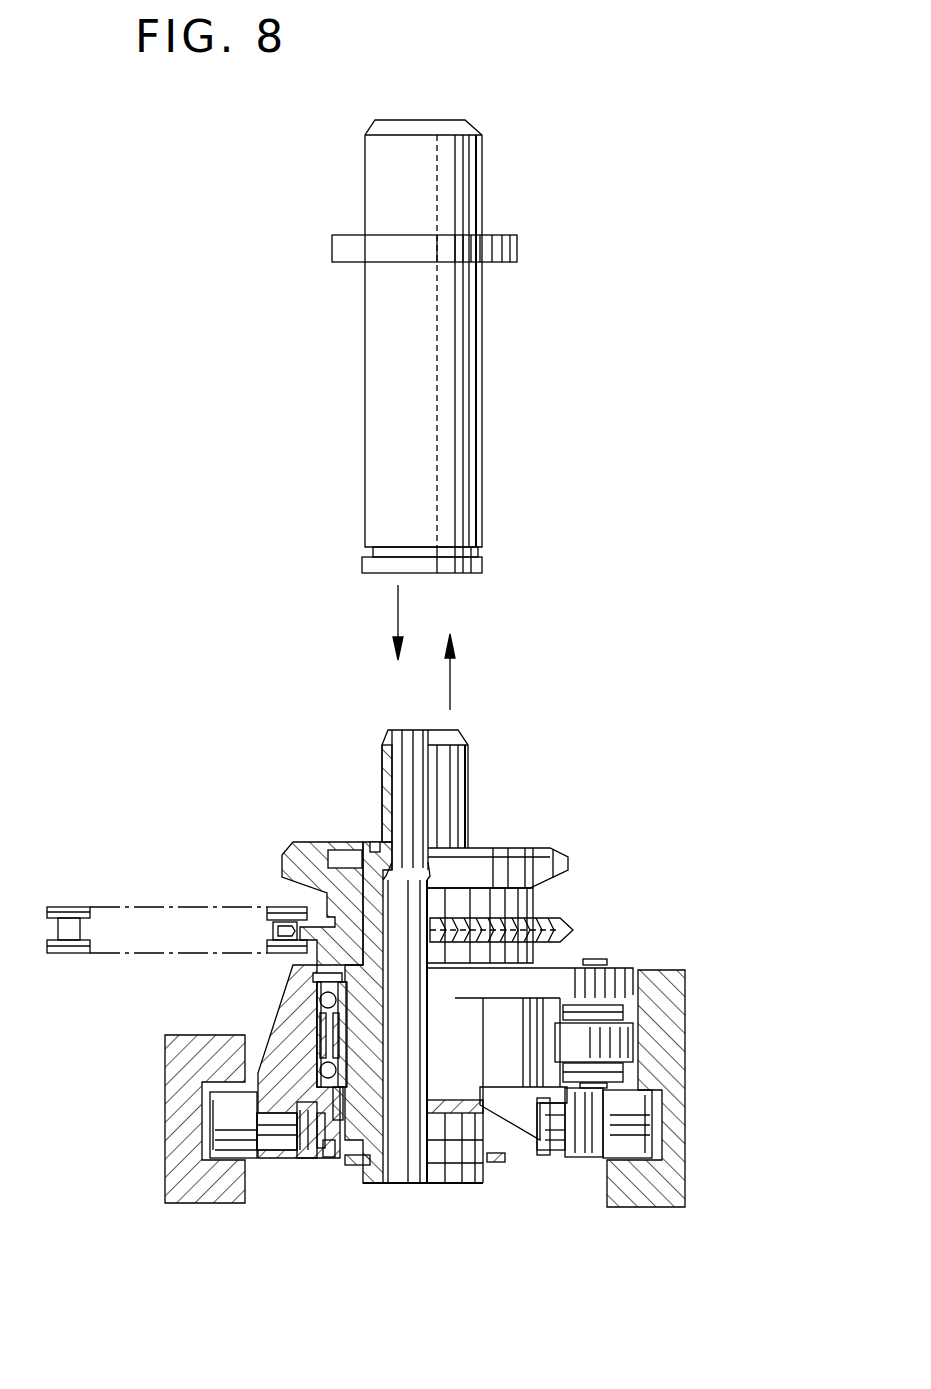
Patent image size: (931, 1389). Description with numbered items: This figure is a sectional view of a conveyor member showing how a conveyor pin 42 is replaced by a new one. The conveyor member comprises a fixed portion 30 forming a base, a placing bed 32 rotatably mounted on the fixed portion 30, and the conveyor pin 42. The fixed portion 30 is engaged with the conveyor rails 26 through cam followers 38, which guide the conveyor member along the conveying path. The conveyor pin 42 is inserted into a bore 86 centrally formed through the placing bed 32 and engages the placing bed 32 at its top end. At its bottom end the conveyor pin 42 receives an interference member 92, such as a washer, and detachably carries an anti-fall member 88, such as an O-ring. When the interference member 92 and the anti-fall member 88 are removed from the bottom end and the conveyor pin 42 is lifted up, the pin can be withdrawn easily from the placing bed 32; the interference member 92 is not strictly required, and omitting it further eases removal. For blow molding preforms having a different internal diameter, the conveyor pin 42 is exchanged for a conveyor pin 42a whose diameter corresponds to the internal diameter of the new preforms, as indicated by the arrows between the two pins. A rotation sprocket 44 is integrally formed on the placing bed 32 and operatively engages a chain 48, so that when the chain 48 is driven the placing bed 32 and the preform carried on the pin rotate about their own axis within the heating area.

The conveyor pin 42a is at (487, 205).
The conveyor pin 42 is at (468, 800).
The placing bed 32 is at (545, 863).
The rotation sprocket 44 is at (560, 920).
The fixed portion 30 is at (560, 977).
The conveyor rails 26 is at (175, 1147).
The cam followers 38 is at (232, 1135).
The chain 48 is at (73, 905).
The bore 86 is at (322, 893).
The interference member 92 is at (333, 1145).
The anti-fall member 88 is at (358, 1166).